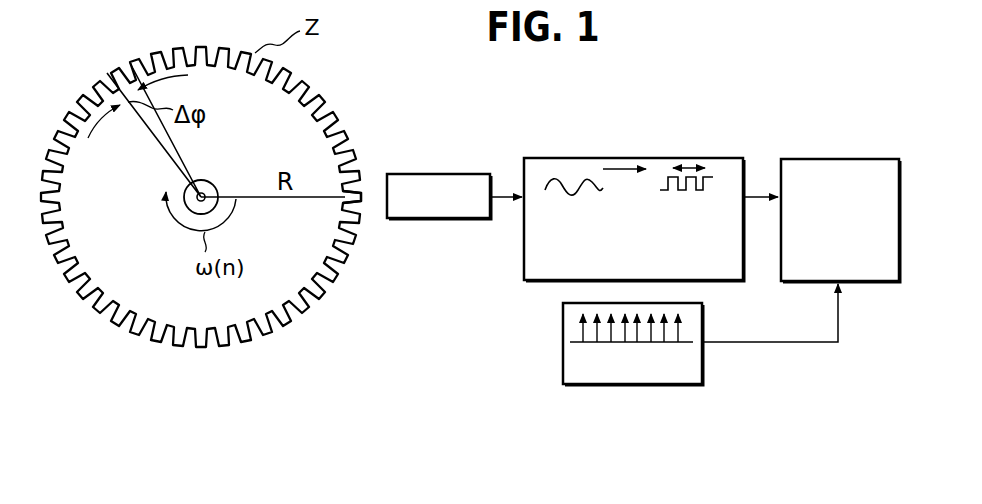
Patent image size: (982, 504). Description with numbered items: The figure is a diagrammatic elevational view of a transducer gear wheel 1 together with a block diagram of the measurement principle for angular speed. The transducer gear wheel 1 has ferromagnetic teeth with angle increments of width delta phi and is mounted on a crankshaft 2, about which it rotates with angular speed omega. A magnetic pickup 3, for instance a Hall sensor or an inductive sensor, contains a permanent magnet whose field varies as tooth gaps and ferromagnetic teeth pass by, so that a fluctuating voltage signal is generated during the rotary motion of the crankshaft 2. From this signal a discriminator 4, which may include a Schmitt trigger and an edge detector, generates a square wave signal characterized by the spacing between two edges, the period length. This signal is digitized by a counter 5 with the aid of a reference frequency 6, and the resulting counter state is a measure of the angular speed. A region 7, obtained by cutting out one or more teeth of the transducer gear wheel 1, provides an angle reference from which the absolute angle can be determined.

The transducer gear wheel 1 is at (287, 113).
The crankshaft 2 is at (210, 183).
The magnetic pickup 3 is at (450, 175).
The discriminator 4 is at (585, 162).
The counter 5 is at (836, 165).
The reference frequency 6 is at (563, 323).
The region 7 is at (352, 196).